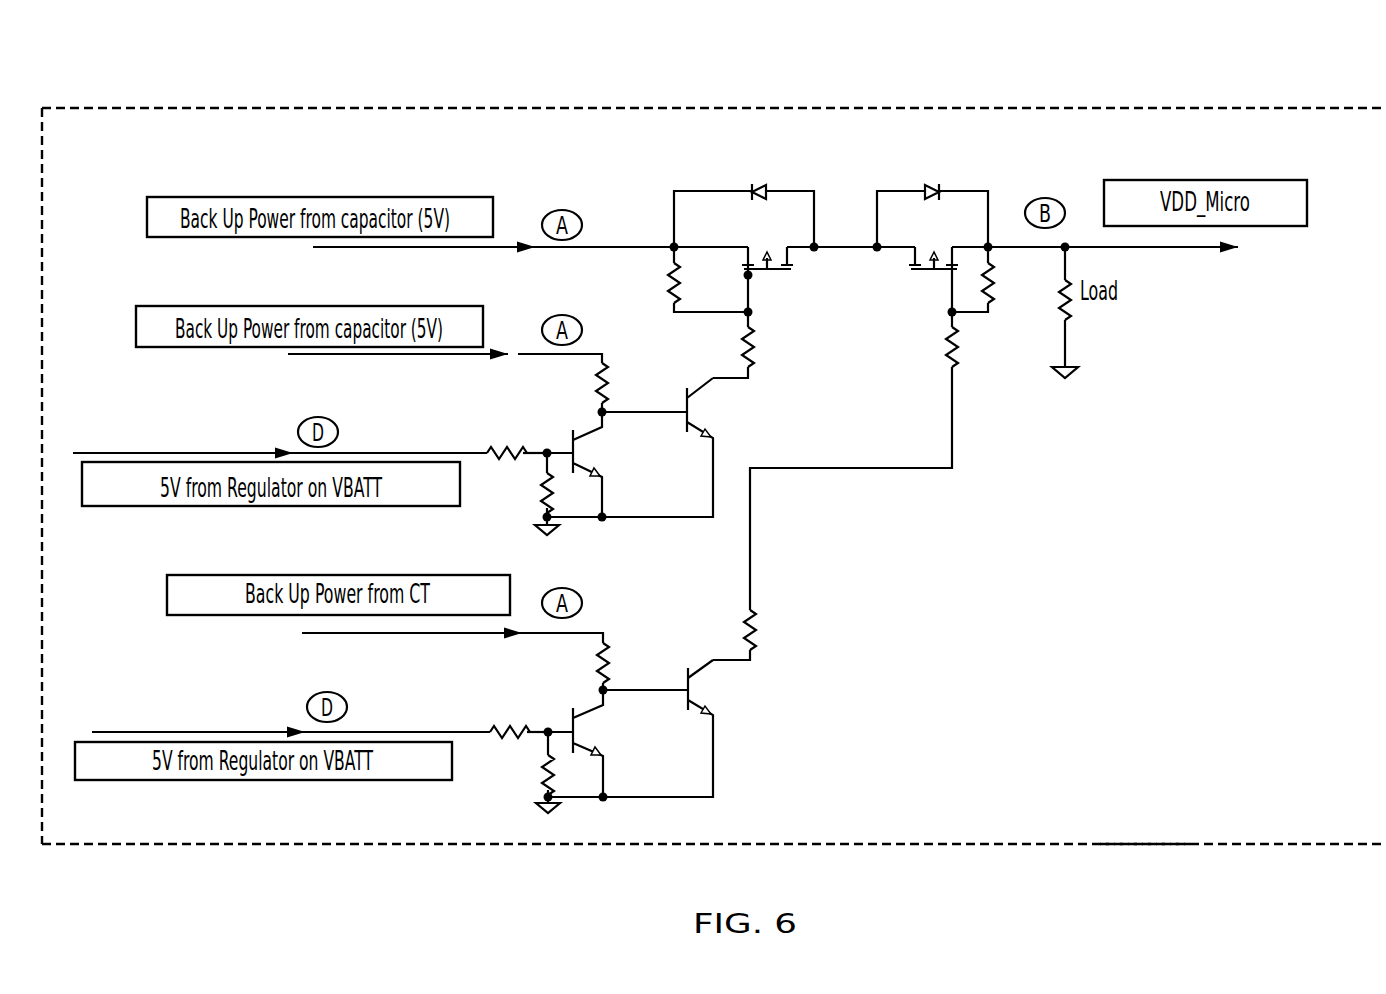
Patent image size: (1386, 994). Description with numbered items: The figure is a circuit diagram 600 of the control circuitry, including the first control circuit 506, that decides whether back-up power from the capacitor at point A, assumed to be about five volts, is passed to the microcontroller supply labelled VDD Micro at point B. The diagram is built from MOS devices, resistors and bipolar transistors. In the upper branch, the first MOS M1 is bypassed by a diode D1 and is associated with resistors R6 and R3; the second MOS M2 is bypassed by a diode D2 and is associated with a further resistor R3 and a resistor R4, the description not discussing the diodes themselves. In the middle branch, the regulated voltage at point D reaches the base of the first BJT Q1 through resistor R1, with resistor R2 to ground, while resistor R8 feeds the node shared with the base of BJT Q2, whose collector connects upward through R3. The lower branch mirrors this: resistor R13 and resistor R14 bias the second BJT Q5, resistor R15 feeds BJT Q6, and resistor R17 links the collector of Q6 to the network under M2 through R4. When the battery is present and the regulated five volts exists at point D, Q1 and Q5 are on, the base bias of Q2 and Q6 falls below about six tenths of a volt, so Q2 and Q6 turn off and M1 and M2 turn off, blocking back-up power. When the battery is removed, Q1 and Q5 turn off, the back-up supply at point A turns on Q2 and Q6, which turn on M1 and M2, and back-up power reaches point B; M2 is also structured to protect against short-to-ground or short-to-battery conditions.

The circuit diagram 600 is at (1207, 99).
The first control circuit 506 is at (1125, 845).
The diode D1 is at (744, 199).
The diode D2 is at (932, 199).
The first MOS M1 is at (765, 262).
The second MOS M2 is at (933, 262).
The resistor R1 is at (517, 434).
The resistor R2 is at (533, 494).
The resistor R3 is at (871, 312).
The resistor R4 is at (872, 461).
The resistor R6 is at (708, 279).
The resistor R8 is at (641, 385).
The resistor R13 is at (519, 711).
The resistor R14 is at (527, 772).
The resistor R15 is at (642, 666).
The resistor R17 is at (758, 631).
The first BJT Q1 is at (583, 464).
The BJT Q2 is at (642, 447).
The second BJT Q5 is at (586, 743).
The BJT Q6 is at (639, 728).